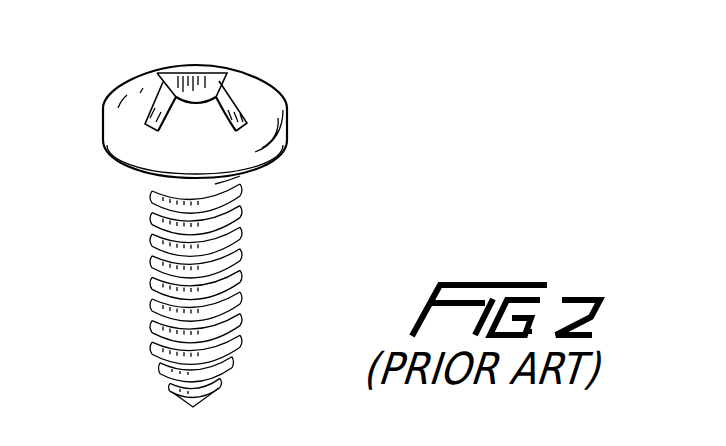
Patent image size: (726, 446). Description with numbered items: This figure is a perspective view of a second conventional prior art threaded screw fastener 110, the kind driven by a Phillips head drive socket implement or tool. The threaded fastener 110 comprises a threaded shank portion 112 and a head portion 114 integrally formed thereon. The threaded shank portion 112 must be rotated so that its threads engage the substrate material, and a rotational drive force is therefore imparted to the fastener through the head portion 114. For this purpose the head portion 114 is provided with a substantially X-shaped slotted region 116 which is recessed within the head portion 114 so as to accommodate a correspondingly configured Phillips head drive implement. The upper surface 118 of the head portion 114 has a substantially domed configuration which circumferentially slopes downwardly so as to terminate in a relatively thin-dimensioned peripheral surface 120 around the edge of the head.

The threaded fastener 110 is at (312, 105).
The threaded shank portion 112 is at (150, 277).
The head portion 114 is at (120, 87).
The X-shaped slotted region 116 is at (185, 86).
The upper surface 118 is at (227, 147).
The peripheral surface 120 is at (54, 199).